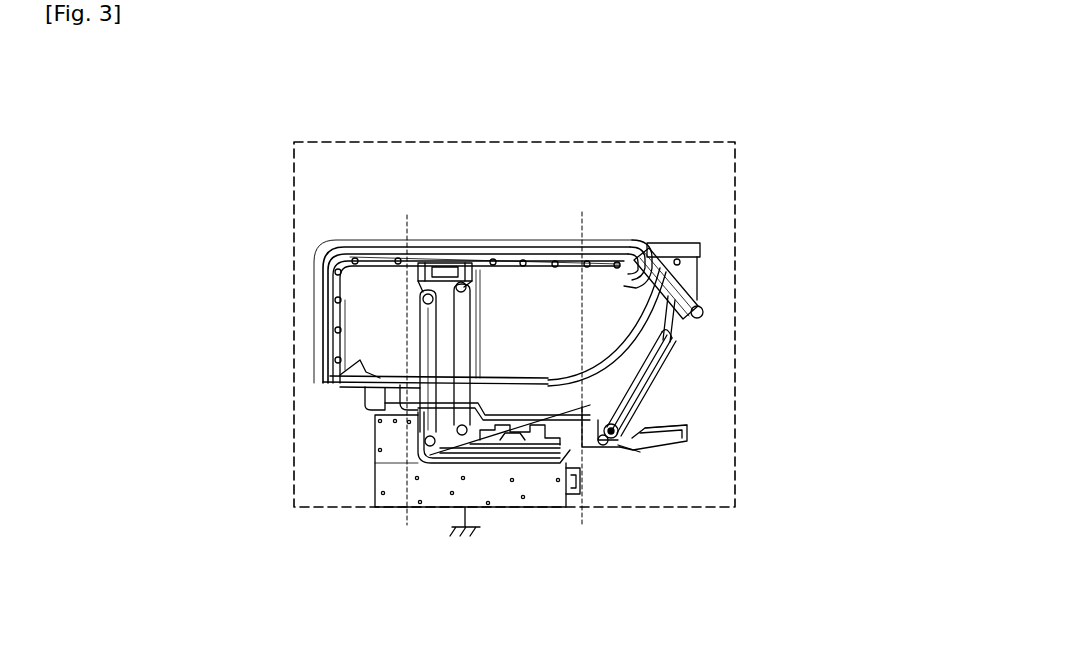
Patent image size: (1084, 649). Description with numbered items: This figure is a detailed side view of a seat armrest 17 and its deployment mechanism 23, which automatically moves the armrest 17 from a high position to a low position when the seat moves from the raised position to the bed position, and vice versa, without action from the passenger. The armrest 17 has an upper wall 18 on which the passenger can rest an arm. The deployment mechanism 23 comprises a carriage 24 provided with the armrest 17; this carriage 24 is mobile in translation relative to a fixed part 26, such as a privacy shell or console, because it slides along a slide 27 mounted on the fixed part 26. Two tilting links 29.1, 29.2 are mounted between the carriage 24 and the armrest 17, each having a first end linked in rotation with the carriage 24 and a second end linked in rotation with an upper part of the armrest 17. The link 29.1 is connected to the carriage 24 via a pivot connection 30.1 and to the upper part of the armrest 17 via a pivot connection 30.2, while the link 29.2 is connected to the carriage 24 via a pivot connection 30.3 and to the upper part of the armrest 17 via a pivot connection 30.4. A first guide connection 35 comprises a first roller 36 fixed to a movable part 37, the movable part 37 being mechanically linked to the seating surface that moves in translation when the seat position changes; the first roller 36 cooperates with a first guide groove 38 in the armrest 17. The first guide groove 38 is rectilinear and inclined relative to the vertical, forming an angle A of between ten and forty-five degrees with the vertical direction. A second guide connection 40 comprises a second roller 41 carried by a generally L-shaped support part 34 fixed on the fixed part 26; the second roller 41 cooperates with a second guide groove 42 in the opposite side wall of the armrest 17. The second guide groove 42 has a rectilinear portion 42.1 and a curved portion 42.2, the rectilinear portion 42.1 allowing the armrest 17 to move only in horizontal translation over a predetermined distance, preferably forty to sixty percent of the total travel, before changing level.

The armrest 17 is at (410, 209).
The upper wall 18 is at (548, 242).
The deployment mechanism 23 is at (487, 306).
The carriage 24 is at (375, 487).
The fixed part 26 is at (470, 512).
The slide 27 is at (582, 490).
The tilting link 29.1 is at (428, 328).
The tilting link 29.2 is at (490, 348).
The pivot connection 30.1 is at (410, 467).
The pivot connection 30.2 is at (330, 244).
The pivot connection 30.3 is at (555, 408).
The pivot connection 30.4 is at (470, 262).
The support part 34 is at (372, 396).
The first guide connection 35 is at (700, 395).
The first roller 36 is at (614, 442).
The movable part 37 is at (665, 447).
The first guide groove 38 is at (690, 380).
The second guide connection 40 is at (378, 358).
The second roller 41 is at (335, 372).
The second guide groove 42 is at (548, 378).
The rectilinear portion 42.1 is at (385, 397).
The curved portion 42.2 is at (703, 320).
The angle A is at (703, 414).